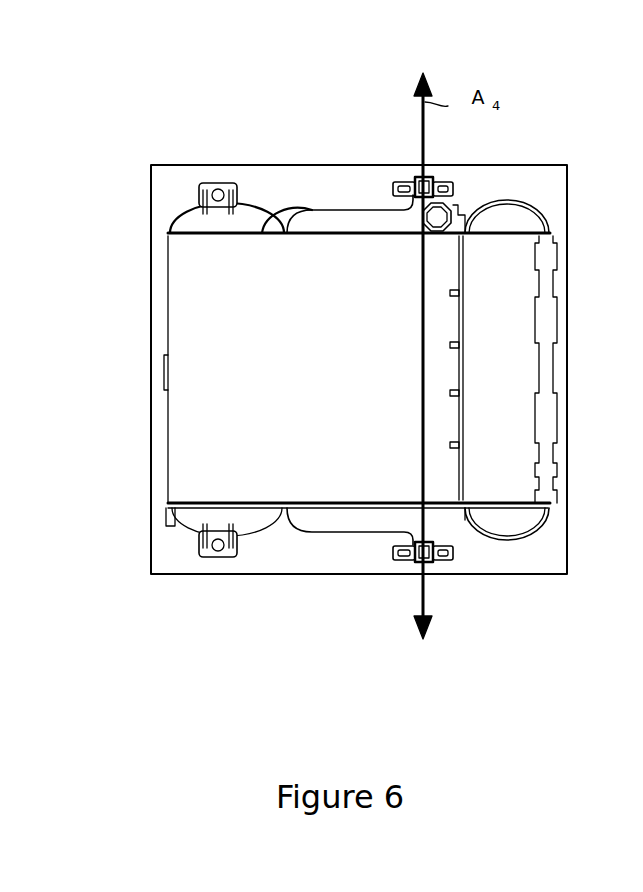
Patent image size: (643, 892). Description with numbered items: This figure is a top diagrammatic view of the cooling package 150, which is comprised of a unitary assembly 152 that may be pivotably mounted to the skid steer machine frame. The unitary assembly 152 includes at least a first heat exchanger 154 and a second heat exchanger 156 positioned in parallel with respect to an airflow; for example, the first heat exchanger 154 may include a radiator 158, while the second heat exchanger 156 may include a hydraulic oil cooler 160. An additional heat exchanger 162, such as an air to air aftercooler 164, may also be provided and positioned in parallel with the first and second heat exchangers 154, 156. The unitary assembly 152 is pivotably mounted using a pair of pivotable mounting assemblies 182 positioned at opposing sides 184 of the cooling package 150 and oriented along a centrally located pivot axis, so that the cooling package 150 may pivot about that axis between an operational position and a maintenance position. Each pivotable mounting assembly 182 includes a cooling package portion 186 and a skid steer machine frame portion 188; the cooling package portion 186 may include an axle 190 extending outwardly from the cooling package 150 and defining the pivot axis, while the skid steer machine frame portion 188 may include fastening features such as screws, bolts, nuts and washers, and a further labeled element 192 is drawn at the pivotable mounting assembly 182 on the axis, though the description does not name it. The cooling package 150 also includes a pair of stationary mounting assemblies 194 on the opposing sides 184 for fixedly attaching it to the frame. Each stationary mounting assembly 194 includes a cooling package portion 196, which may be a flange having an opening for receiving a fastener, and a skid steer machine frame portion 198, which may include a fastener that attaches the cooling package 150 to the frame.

The cooling package 150 is at (540, 101).
The unitary assembly 152 is at (316, 214).
The first heat exchanger 154 is at (373, 257).
The second heat exchanger 156 is at (247, 260).
The radiator 158 is at (348, 247).
The hydraulic oil cooler 160 is at (190, 253).
The additional heat exchanger 162 is at (515, 247).
The air to air aftercooler 164 is at (528, 281).
The pivotable mounting assembly 182 is at (456, 177).
The opposing sides 184 is at (306, 196).
The cooling package portion 186 is at (455, 190).
The skid steer machine frame portion 188 is at (398, 182).
The axle 190 is at (457, 197).
The clamp block 192 is at (428, 177).
The stationary mounting assembly 194 is at (235, 176).
The cooling package portion 196 is at (212, 181).
The skid steer machine frame portion 198 is at (222, 190).